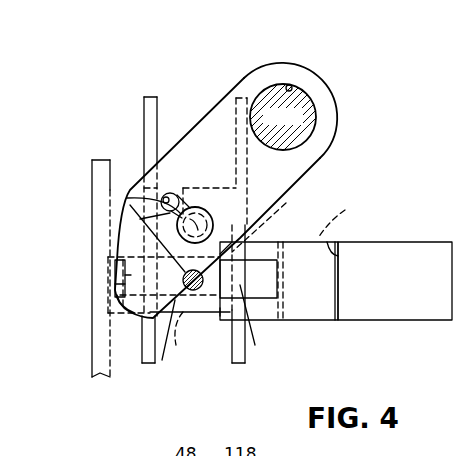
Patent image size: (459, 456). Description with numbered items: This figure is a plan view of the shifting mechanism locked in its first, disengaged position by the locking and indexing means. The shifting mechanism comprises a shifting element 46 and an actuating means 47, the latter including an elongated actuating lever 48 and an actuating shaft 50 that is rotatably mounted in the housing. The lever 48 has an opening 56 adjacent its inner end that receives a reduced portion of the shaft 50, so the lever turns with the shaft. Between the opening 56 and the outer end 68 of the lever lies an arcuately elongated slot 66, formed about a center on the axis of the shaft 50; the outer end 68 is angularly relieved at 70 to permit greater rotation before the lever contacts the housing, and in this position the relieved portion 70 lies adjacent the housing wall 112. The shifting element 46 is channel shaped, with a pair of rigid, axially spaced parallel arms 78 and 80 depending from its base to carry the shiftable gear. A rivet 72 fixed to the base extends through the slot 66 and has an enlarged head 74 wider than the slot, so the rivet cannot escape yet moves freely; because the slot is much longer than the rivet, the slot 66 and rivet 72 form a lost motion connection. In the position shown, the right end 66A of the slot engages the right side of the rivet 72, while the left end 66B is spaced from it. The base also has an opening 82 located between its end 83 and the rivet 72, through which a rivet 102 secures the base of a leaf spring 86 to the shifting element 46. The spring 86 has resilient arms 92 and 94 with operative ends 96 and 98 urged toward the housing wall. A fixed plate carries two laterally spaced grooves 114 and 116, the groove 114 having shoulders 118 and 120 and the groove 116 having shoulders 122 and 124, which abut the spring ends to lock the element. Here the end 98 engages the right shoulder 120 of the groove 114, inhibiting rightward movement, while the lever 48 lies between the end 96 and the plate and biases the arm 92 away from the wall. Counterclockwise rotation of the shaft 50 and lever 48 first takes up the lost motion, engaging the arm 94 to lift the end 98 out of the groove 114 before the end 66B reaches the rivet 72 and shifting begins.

The shifting element 46 is at (137, 340).
The actuating means 47 is at (324, 163).
The actuating lever 48 is at (203, 133).
The actuating shaft 50 is at (283, 115).
The opening 56 is at (290, 86).
The arcuately elongated slot 66 is at (140, 219).
The right end of slot 66A is at (213, 218).
The left end of slot 66B is at (127, 198).
The outer end of lever 68 is at (118, 307).
The angularly relieved portion 70 is at (118, 243).
The rivet 72 is at (195, 181).
The enlarged head 74 is at (182, 192).
The arm 78 is at (237, 364).
The arm 80 is at (146, 364).
The opening 82 is at (188, 335).
The end of base portion 83 is at (162, 360).
The leaf spring 86 is at (255, 345).
The resilient arm 92 is at (112, 262).
The resilient arm 94 is at (250, 270).
The operative end 96 is at (114, 285).
The operative end 98 is at (273, 281).
The rivet 102 is at (184, 277).
The wall 112 is at (114, 168).
The groove 114 is at (277, 224).
The groove 116 is at (320, 305).
The shoulder 118 is at (220, 314).
The shoulder 120 is at (270, 320).
The shoulder 122 is at (346, 217).
The shoulder 124 is at (330, 246).